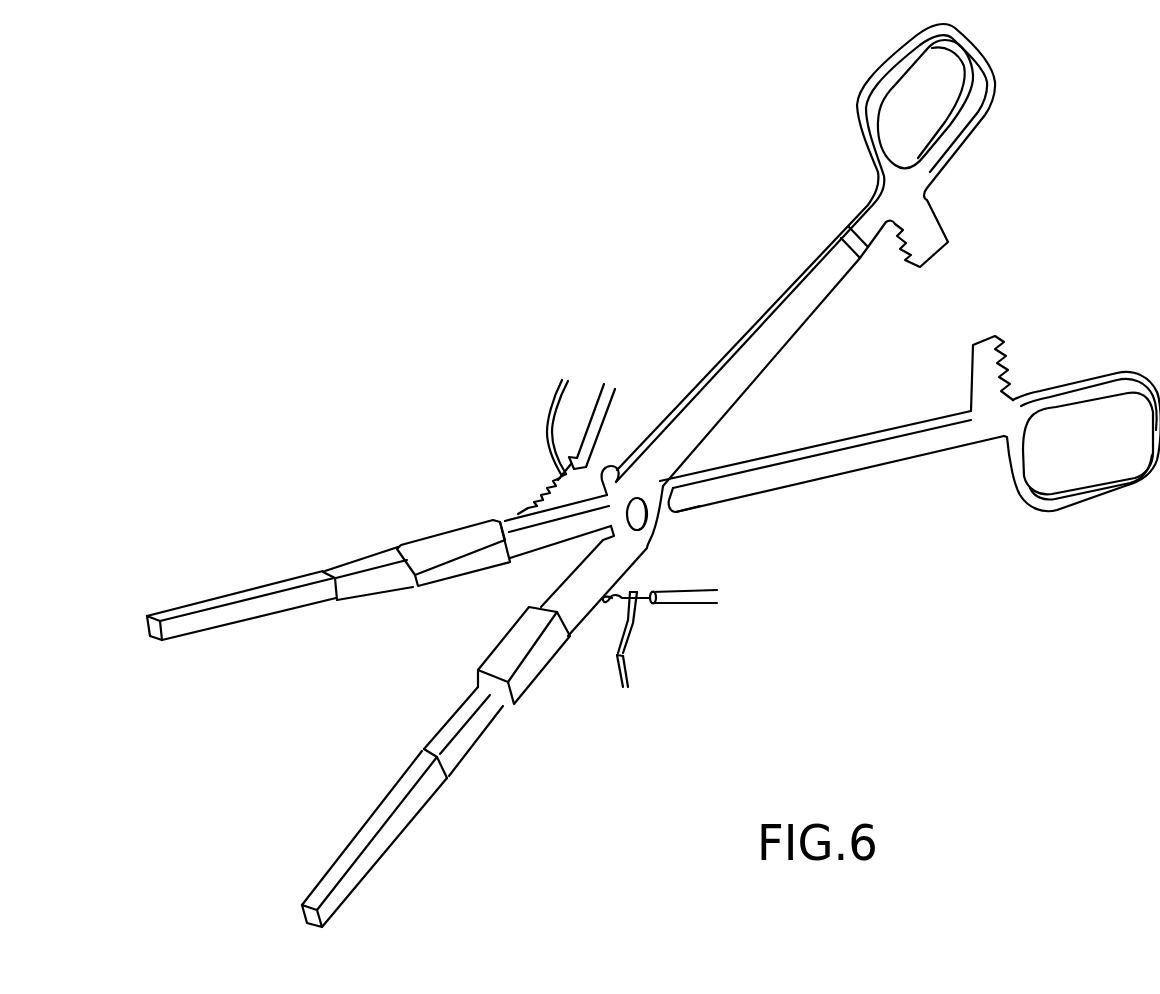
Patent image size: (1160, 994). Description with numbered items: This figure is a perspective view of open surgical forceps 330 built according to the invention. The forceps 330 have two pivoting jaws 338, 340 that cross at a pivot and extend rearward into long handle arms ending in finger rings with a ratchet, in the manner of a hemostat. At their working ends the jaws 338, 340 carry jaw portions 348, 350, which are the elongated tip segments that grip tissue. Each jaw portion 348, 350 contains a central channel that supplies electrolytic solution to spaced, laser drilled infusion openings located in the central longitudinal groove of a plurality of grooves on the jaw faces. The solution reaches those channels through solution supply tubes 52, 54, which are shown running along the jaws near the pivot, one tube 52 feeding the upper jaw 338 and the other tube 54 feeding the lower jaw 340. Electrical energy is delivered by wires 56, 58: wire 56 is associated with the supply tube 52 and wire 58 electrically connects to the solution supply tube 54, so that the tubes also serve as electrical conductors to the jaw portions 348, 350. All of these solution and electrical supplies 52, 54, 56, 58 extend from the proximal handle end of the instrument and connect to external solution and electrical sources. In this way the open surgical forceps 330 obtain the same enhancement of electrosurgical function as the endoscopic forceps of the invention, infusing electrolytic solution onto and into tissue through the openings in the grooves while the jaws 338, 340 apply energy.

The open surgical forceps 330 is at (857, 483).
The jaw 338 is at (345, 563).
The jaw 340 is at (472, 750).
The jaw portion 348 is at (202, 597).
The jaw portion 350 is at (368, 867).
The solution supply tube 52 is at (600, 414).
The solution supply tube 54 is at (676, 597).
The wire 56 is at (548, 402).
The wire 58 is at (622, 677).